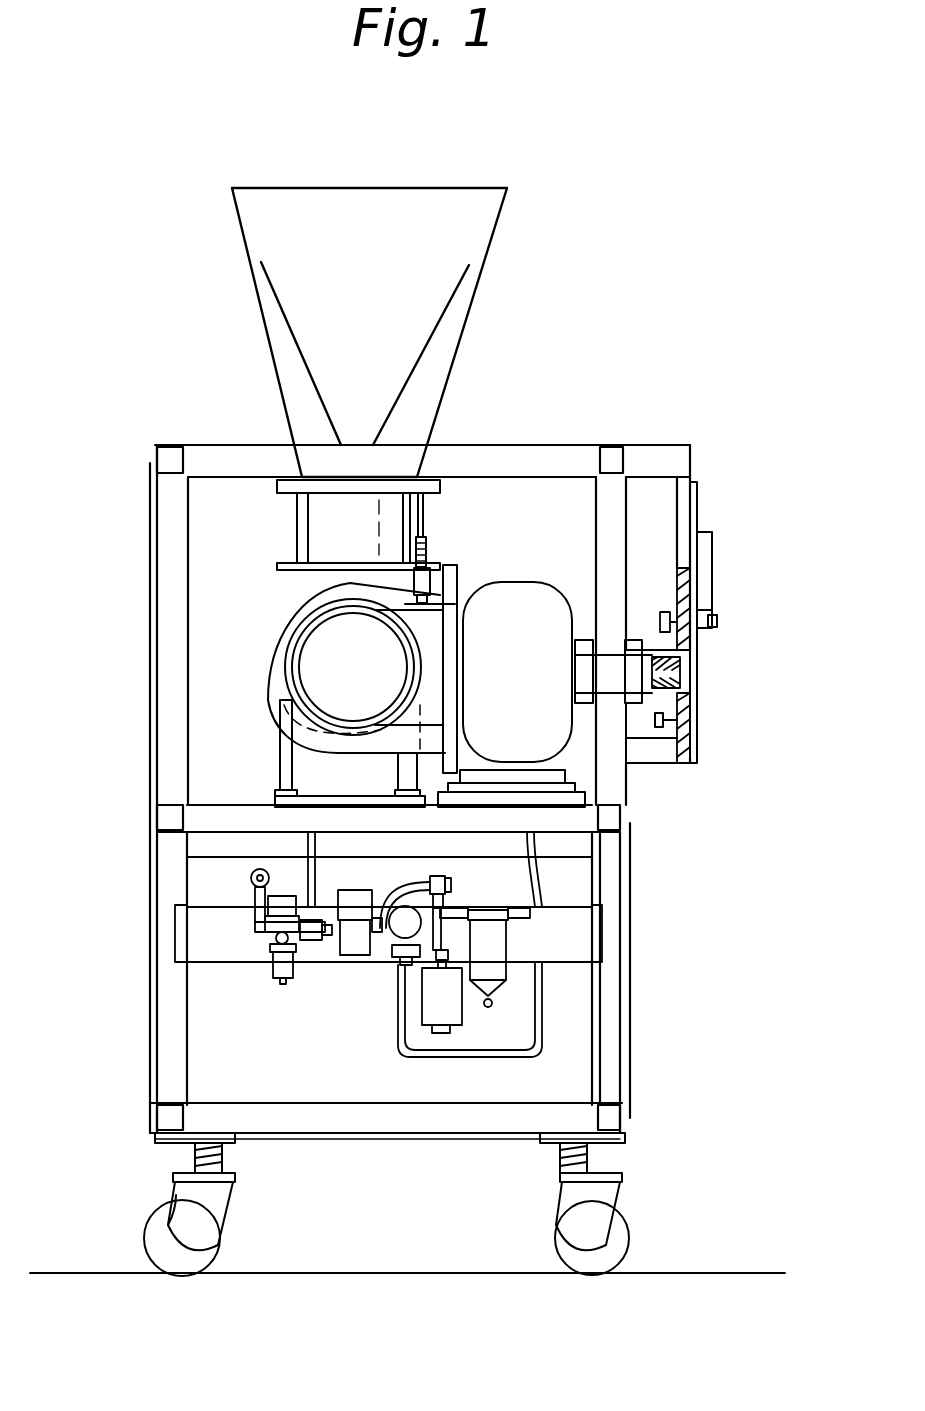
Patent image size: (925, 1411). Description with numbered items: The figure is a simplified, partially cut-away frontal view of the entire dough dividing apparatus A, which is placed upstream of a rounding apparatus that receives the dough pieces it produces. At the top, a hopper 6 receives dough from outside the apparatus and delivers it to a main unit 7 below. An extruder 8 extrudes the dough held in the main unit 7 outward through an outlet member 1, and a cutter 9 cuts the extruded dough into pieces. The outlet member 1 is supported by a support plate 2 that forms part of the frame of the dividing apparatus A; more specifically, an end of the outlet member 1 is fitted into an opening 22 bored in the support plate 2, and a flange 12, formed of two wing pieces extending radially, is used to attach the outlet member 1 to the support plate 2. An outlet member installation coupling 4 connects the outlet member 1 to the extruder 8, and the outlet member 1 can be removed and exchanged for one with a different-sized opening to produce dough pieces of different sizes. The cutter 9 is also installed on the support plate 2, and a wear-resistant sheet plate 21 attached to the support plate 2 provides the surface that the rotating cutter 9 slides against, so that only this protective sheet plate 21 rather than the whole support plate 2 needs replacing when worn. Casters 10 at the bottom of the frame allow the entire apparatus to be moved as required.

The dividing apparatus A is at (620, 236).
The outlet member 1 is at (692, 698).
The support plate 2 is at (690, 465).
The outlet member installation coupling 4 is at (658, 657).
The hopper 6 is at (236, 232).
The main unit 7 is at (262, 604).
The extruder 8 is at (642, 712).
The cutter 9 is at (722, 558).
The casters 10 is at (157, 1232).
The flange 12 is at (668, 600).
The sheet plate 21 is at (697, 514).
The opening 22 is at (692, 700).